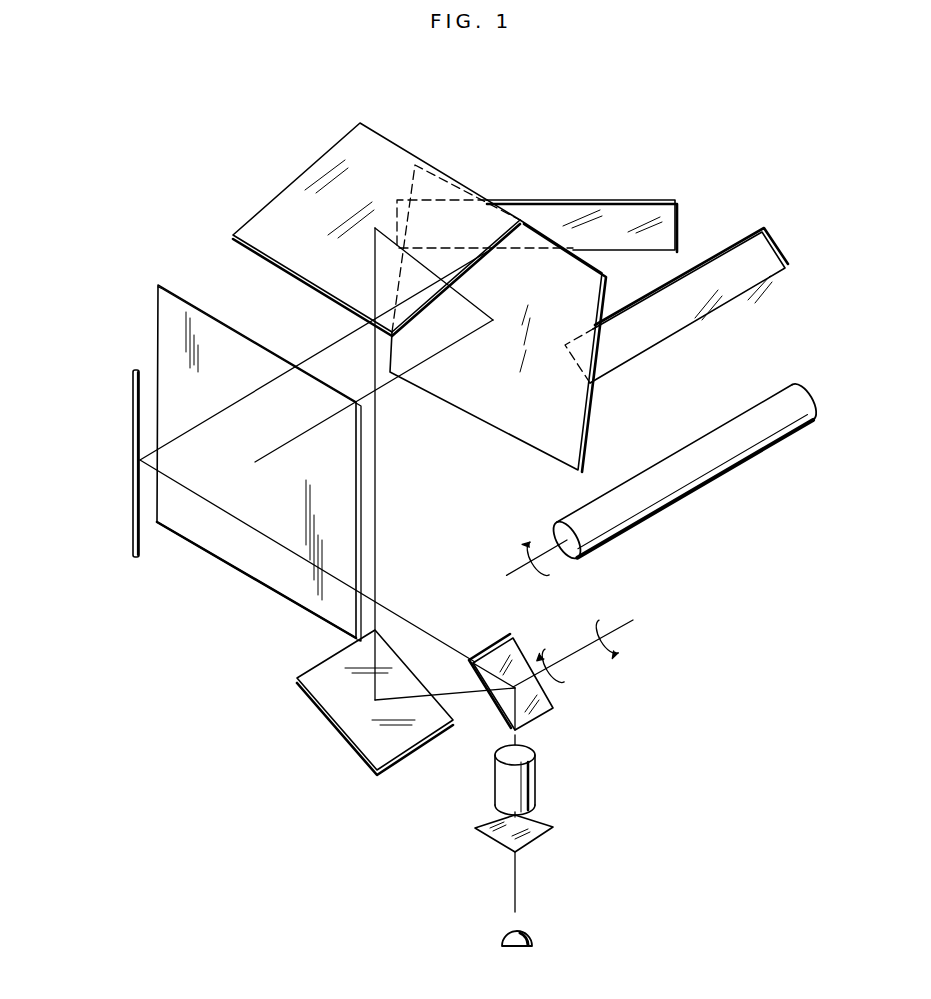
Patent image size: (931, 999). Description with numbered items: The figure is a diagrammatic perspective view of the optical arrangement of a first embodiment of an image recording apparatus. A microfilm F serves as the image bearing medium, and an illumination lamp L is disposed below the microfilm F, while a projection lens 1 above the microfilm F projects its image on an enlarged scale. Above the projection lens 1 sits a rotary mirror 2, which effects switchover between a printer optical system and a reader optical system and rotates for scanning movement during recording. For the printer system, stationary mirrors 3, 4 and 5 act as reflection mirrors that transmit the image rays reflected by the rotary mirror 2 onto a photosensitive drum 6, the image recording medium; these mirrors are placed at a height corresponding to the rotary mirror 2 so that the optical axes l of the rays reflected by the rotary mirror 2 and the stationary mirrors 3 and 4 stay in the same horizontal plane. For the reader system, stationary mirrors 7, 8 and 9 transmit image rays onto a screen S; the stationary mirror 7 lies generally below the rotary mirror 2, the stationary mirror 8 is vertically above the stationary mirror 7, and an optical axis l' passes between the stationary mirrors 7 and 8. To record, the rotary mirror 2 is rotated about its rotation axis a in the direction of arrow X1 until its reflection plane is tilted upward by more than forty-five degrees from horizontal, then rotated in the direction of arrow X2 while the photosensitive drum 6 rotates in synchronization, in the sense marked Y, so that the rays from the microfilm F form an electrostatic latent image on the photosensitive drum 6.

The projection lens 1 is at (525, 785).
The rotary mirror 2 is at (551, 707).
The stationary mirror 3 is at (130, 388).
The stationary mirror 4 is at (592, 192).
The stationary mirror 5 is at (770, 258).
The photosensitive drum 6 is at (807, 383).
The stationary mirror 7 is at (358, 757).
The stationary mirror 8 is at (372, 138).
The stationary mirror 9 is at (532, 438).
The screen S is at (173, 306).
The microfilm F is at (540, 836).
The illumination lamp L is at (532, 930).
The rotation axis a is at (492, 704).
The optical axis l is at (307, 561).
The optical axis l' is at (394, 464).
The arrow X1 is at (577, 640).
The arrow X2 is at (555, 658).
The rotation axis Y is at (522, 559).